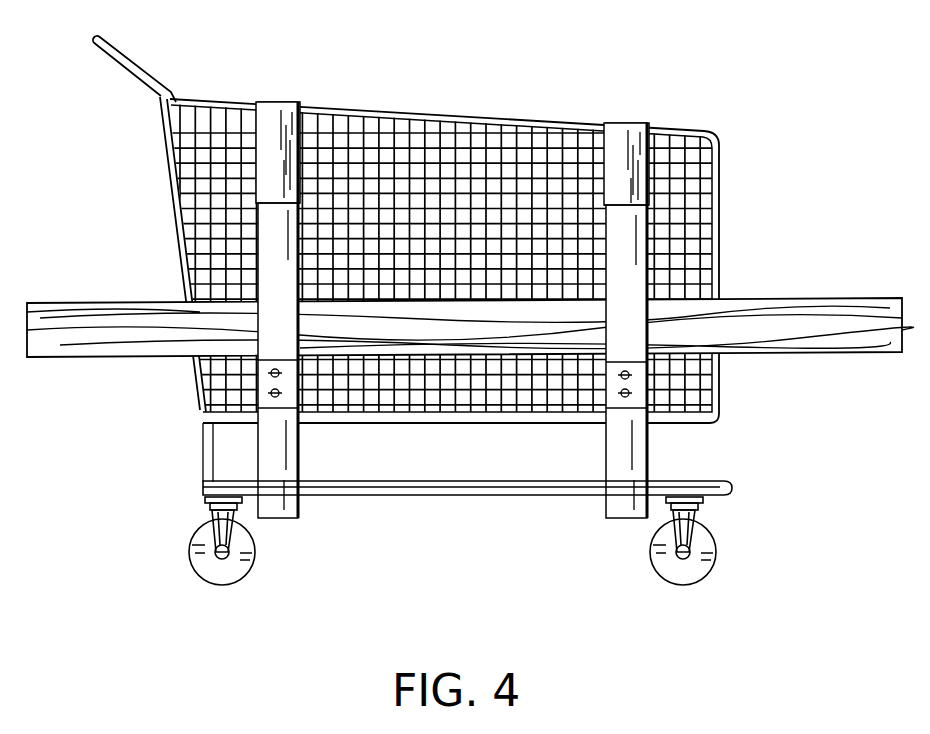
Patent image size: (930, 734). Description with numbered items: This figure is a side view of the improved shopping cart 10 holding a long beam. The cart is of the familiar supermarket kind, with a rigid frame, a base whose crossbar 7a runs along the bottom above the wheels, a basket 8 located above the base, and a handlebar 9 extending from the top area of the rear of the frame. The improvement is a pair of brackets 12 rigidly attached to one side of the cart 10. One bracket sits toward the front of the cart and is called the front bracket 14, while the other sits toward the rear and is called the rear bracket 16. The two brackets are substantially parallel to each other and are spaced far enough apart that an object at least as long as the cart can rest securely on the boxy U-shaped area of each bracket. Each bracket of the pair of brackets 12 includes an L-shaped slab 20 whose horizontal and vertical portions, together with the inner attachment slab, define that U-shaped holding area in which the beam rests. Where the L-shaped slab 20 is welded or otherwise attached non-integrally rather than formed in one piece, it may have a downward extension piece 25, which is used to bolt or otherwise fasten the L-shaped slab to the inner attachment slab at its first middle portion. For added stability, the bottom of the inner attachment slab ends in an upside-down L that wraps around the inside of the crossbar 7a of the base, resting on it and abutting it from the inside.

The crossbar 7a is at (472, 483).
The basket 8 is at (700, 173).
The handlebar 9 is at (131, 67).
The shopping cart 10 is at (205, 78).
The pair of brackets 12 is at (615, 247).
The front bracket 14 is at (639, 126).
The rear bracket 16 is at (290, 117).
The L-shaped slab 20 is at (640, 288).
The downward extension piece 25 is at (262, 386).